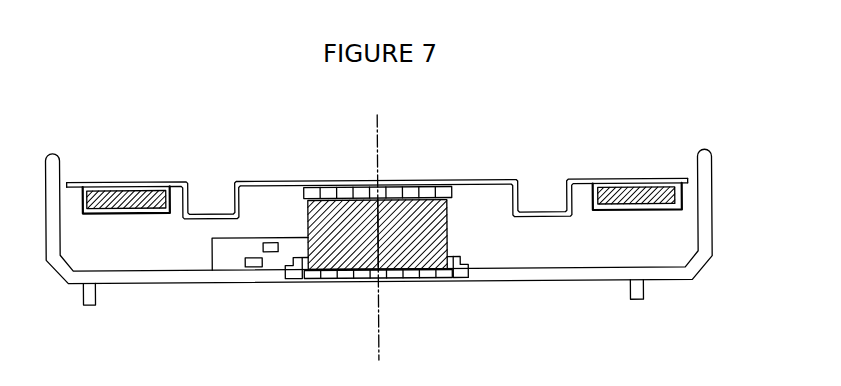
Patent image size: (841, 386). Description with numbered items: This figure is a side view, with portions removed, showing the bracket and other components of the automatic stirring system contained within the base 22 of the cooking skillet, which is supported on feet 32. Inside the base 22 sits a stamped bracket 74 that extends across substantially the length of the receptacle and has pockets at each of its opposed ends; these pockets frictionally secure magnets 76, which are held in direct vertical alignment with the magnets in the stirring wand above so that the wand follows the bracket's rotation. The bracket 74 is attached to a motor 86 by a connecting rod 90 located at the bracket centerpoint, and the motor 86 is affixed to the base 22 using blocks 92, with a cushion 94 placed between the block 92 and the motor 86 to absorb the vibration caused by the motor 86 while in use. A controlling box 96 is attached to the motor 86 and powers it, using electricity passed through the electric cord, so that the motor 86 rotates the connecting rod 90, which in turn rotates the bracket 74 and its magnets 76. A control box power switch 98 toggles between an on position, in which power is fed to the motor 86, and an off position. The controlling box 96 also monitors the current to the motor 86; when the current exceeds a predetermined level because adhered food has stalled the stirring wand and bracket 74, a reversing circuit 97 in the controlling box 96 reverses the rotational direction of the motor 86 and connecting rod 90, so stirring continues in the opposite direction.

The base 22 is at (707, 219).
The stamped bracket 74 is at (480, 181).
The magnets 76 is at (130, 182).
The connecting rod 90 is at (381, 181).
The motor 86 is at (353, 282).
The cushion 94 is at (295, 282).
The blocks 92 is at (460, 282).
The controlling box 96 is at (220, 264).
The reversing circuit 97 is at (273, 242).
The control box power switch 98 is at (253, 269).
The feet 32 is at (88, 303).